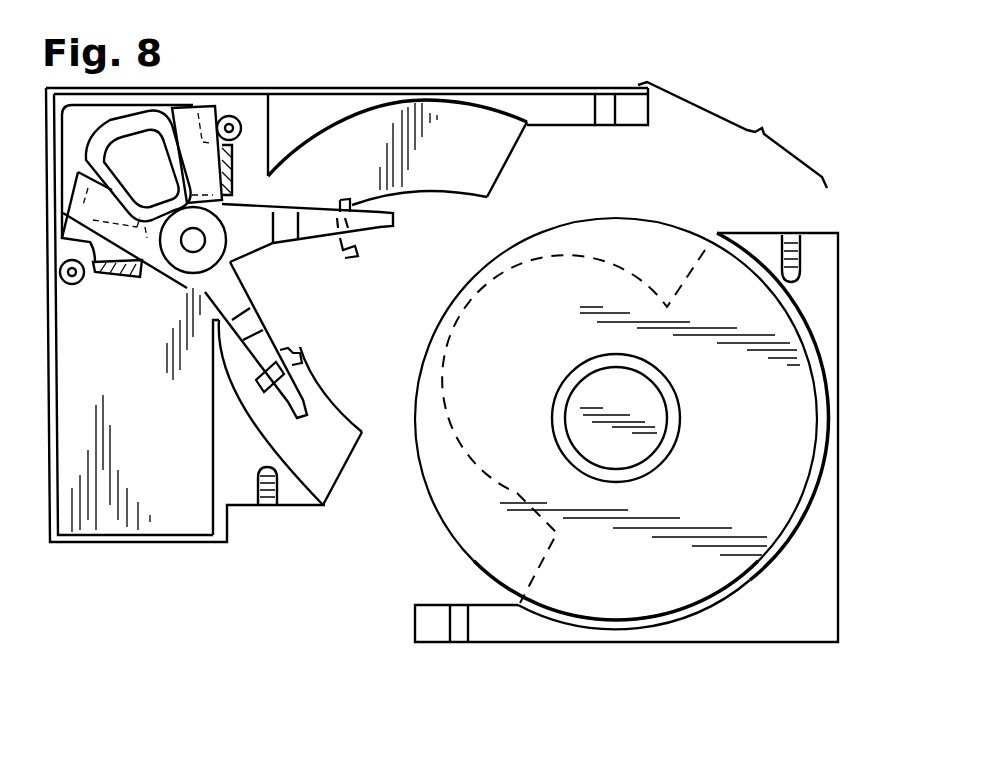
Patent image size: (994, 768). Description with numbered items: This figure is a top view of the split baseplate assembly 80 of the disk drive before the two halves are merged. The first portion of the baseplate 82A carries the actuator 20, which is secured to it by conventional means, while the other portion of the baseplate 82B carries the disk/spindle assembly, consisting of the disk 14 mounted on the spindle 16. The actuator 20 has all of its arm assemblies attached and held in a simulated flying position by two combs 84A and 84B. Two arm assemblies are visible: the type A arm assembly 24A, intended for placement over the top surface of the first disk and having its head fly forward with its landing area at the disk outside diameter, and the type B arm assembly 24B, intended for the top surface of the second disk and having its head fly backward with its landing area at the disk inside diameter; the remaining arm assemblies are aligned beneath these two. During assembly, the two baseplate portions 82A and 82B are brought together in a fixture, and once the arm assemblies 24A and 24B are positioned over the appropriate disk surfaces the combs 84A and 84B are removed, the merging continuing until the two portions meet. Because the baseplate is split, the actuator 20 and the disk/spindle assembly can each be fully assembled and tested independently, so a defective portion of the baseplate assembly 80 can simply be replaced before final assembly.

The first portion of the baseplate 82A is at (166, 88).
The other portion of the baseplate 82B is at (718, 643).
The split baseplate assembly 80 is at (730, 70).
The disk 14 is at (672, 219).
The spindle 16 is at (616, 483).
The actuator 20 is at (75, 310).
The type A arm assembly 24A is at (297, 320).
The type B arm assembly 24B is at (272, 392).
The comb 84A is at (340, 252).
The comb 84B is at (302, 352).